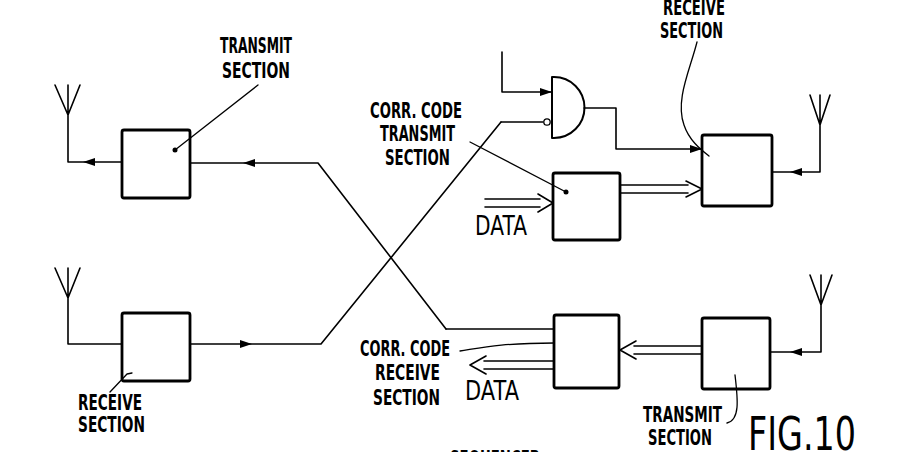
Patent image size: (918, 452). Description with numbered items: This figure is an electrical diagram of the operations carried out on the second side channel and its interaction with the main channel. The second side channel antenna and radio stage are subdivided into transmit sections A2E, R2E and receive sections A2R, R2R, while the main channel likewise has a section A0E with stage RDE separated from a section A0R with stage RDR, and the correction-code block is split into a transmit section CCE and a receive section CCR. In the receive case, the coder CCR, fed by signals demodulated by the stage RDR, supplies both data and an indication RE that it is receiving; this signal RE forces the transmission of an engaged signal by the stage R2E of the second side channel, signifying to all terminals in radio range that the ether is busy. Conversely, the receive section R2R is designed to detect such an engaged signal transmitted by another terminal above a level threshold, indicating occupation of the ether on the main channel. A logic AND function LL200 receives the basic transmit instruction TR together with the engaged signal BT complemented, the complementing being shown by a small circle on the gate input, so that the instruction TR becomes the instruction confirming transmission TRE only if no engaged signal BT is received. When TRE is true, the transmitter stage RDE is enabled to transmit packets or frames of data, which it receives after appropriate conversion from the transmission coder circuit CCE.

The transmit section of antenna A2 A2E is at (68, 86).
The transmit section of radio stage R2 R2E is at (163, 130).
The receive section of antenna A2 A2R is at (68, 269).
The receive section of radio stage R2 R2R is at (165, 313).
The engaged signal BT is at (276, 348).
The basic transmit instruction TR is at (510, 74).
The logic AND function LL200 is at (563, 77).
The instruction confirming transmission TRE is at (603, 108).
The transmitter stage of main channel RDE is at (755, 135).
The transmit section of antenna A0 A0E is at (802, 96).
The transmission coder circuit CCE is at (620, 212).
The receiving indication signal RE is at (490, 329).
The receive section of circuit CC CCR is at (578, 315).
The receiver stage of main channel RDR is at (732, 318).
The receive section of antenna A0 A0R is at (806, 278).